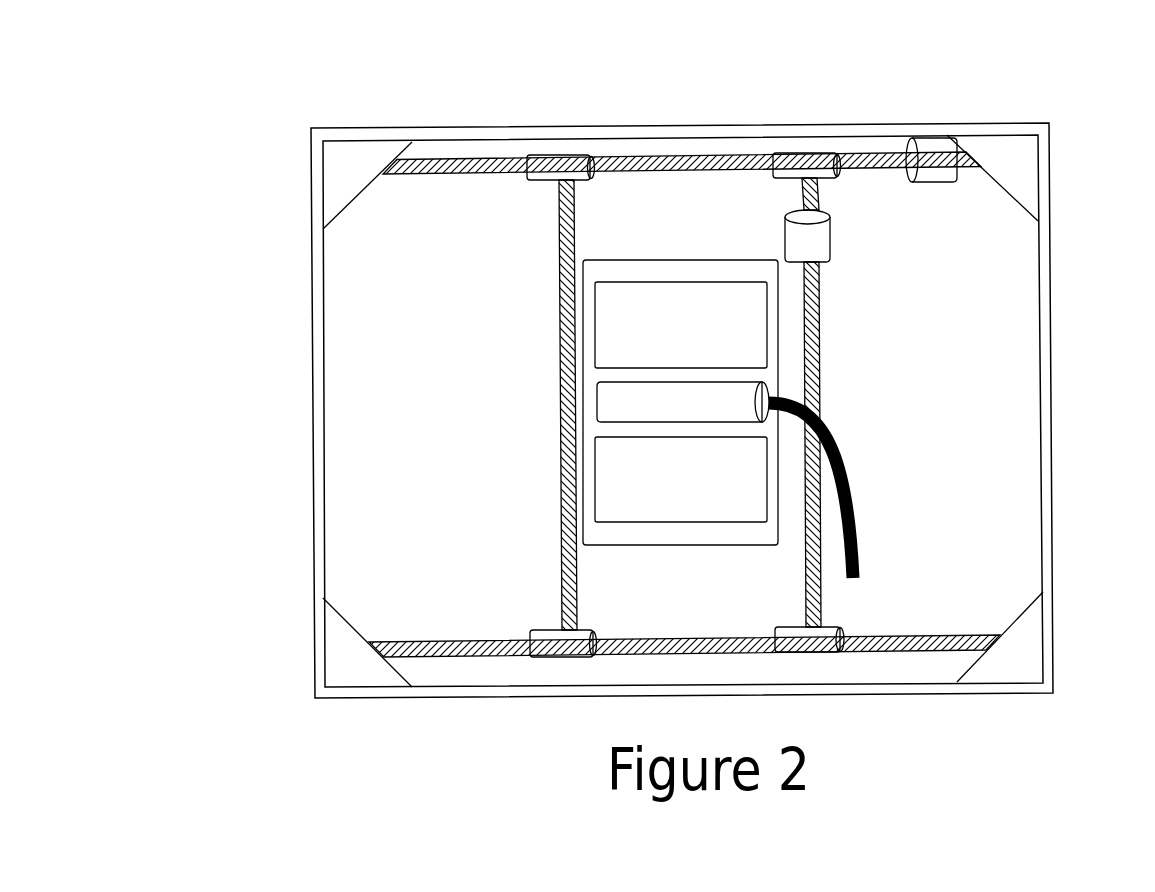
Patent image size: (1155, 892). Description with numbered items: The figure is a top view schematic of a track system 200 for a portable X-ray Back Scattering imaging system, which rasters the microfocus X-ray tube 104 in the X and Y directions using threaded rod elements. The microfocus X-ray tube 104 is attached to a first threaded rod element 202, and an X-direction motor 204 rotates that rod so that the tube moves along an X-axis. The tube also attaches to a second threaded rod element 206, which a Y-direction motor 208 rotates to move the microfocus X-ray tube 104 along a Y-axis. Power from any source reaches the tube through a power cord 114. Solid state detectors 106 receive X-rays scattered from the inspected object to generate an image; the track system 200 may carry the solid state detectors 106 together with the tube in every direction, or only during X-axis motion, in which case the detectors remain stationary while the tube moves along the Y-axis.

The track system 200 is at (198, 102).
The solid state detectors 106 is at (594, 487).
The second threaded rod element 206 is at (488, 363).
The first threaded rod element 202 is at (951, 402).
The X-direction motor 204 is at (717, 171).
The Y-direction motor 208 is at (1006, 137).
The microfocus X-ray tube 104 is at (782, 250).
The power cord 114 is at (954, 477).